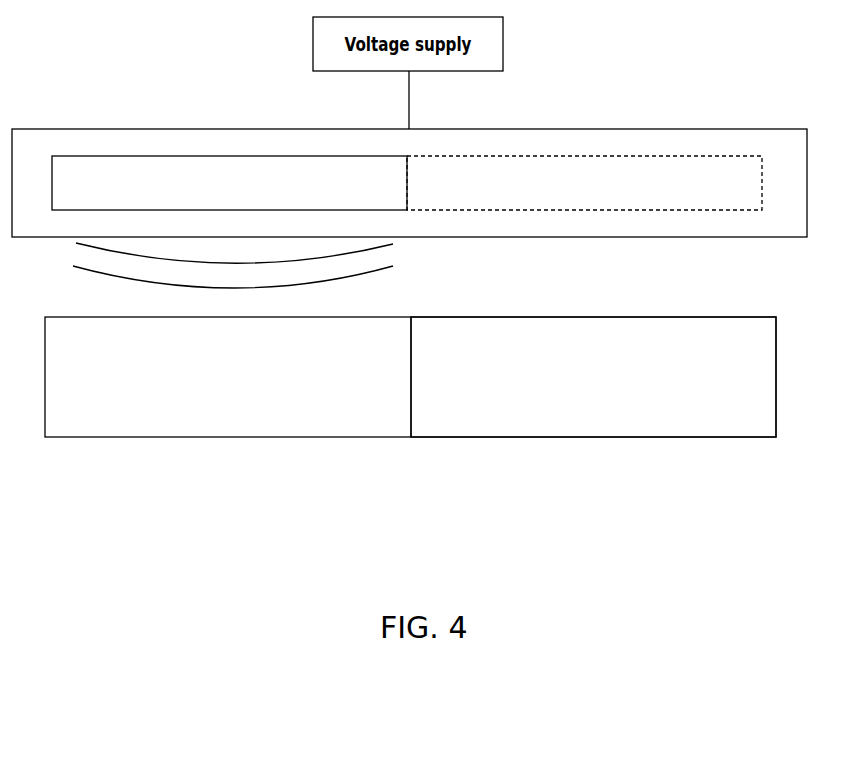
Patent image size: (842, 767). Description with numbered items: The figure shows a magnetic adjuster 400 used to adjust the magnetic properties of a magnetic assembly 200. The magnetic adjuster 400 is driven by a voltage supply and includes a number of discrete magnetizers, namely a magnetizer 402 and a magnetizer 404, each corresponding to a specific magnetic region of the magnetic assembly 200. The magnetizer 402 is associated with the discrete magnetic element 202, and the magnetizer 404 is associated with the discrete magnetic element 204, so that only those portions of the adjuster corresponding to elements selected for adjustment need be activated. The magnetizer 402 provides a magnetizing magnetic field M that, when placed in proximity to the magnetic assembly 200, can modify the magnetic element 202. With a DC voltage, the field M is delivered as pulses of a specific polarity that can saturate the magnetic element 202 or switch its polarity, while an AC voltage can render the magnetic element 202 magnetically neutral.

The magnetic adjuster 400 is at (157, 130).
The magnetizer 402 is at (229, 183).
The magnetizer 404 is at (584, 183).
The magnetizing magnetic field M is at (407, 259).
The magnetic assembly 200 is at (410, 430).
The magnetic element 202 is at (309, 377).
The magnetic element 204 is at (593, 377).